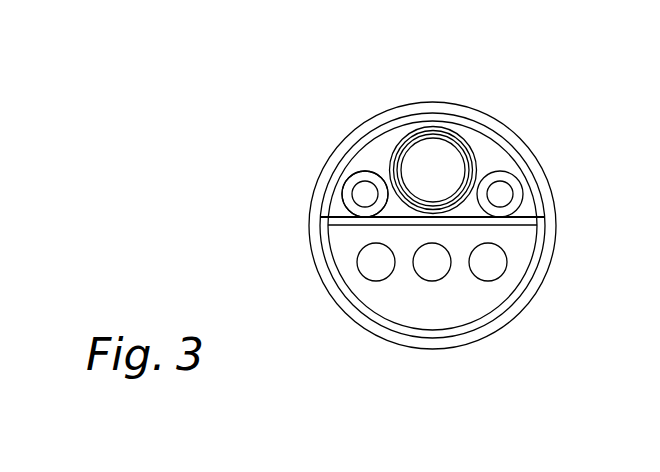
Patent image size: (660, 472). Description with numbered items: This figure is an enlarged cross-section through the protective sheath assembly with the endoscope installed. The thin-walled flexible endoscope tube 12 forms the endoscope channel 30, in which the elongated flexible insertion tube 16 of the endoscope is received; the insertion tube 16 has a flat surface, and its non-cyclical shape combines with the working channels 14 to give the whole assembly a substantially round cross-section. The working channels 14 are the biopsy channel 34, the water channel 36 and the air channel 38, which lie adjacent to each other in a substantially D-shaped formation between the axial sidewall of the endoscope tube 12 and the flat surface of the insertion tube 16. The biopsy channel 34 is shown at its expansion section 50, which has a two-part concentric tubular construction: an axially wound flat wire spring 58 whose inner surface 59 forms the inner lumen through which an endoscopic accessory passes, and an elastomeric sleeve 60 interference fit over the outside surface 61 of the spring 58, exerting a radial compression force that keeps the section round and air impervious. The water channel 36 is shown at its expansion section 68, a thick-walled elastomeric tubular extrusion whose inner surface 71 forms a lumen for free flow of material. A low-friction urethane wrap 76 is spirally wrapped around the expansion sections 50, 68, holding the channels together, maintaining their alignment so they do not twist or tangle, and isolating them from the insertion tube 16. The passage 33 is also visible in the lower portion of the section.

The working channels 14 is at (530, 118).
The endoscope tube 12 is at (517, 155).
The expansion section 50 is at (350, 141).
The endoscope channel 30 is at (513, 298).
The insertion tube 16 is at (377, 298).
The passage 33 is at (425, 222).
The wrap 76 is at (460, 222).
The outside surface 61 is at (392, 152).
The spring 58 is at (477, 164).
The inner surface 59 is at (443, 143).
The biopsy channel 34 is at (425, 163).
The elastomeric sleeve 60 is at (495, 157).
The water channel 36 is at (325, 184).
The inner surface 71 is at (362, 190).
The expansion section 68 is at (350, 203).
The air channel 38 is at (531, 181).